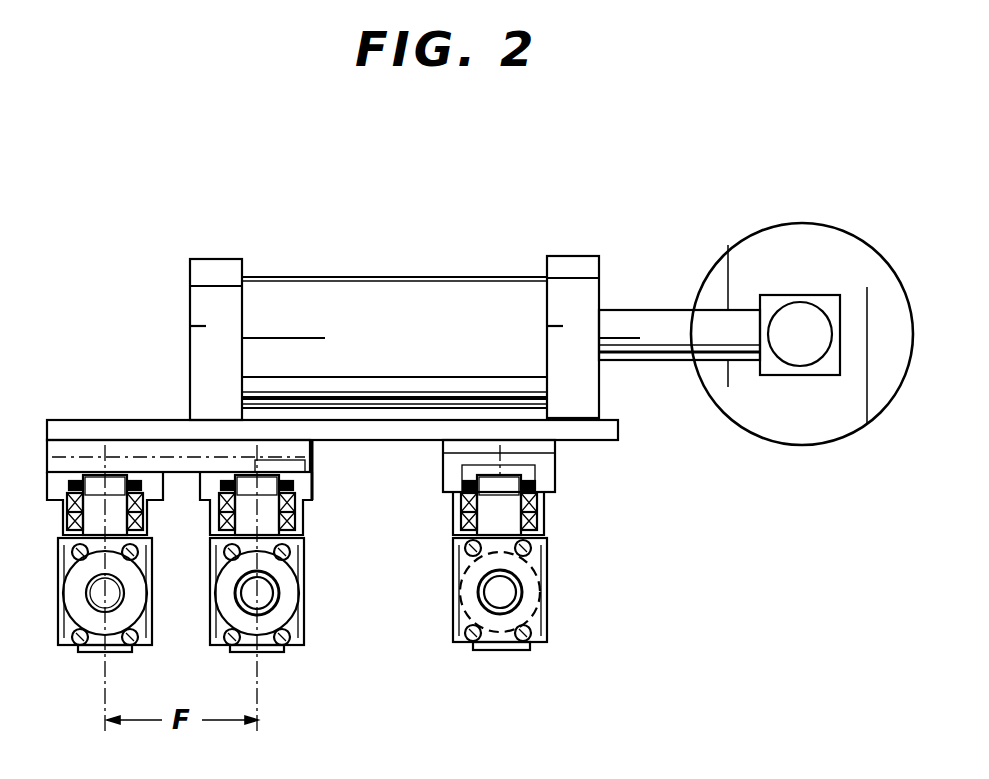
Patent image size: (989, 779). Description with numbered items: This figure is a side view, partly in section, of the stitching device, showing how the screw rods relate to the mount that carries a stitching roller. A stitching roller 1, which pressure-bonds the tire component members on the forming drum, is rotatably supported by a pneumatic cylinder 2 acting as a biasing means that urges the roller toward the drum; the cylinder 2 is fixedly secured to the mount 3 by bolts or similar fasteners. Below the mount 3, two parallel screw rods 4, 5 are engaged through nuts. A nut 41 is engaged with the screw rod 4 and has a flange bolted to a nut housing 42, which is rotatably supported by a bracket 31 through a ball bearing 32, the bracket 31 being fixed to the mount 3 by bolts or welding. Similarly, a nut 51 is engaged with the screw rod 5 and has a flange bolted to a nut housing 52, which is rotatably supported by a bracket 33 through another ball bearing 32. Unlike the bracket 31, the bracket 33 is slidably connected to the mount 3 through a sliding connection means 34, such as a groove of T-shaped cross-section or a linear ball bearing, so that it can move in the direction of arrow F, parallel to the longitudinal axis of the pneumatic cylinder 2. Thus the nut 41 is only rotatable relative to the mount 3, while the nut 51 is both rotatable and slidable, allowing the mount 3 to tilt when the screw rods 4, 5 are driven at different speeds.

The stitching roller 1 is at (742, 237).
The pneumatic cylinder 2 is at (573, 256).
The mount 3 is at (620, 432).
The screw rod 4 is at (500, 600).
The screw rod 5 is at (266, 652).
The bracket 31 is at (548, 468).
The ball bearing 32 is at (305, 511).
The bracket 33 is at (300, 483).
The sliding connection means 34 is at (78, 455).
The nut 41 is at (530, 601).
The nut housing 42 is at (545, 536).
The nut 51 is at (305, 611).
The nut housing 52 is at (303, 535).